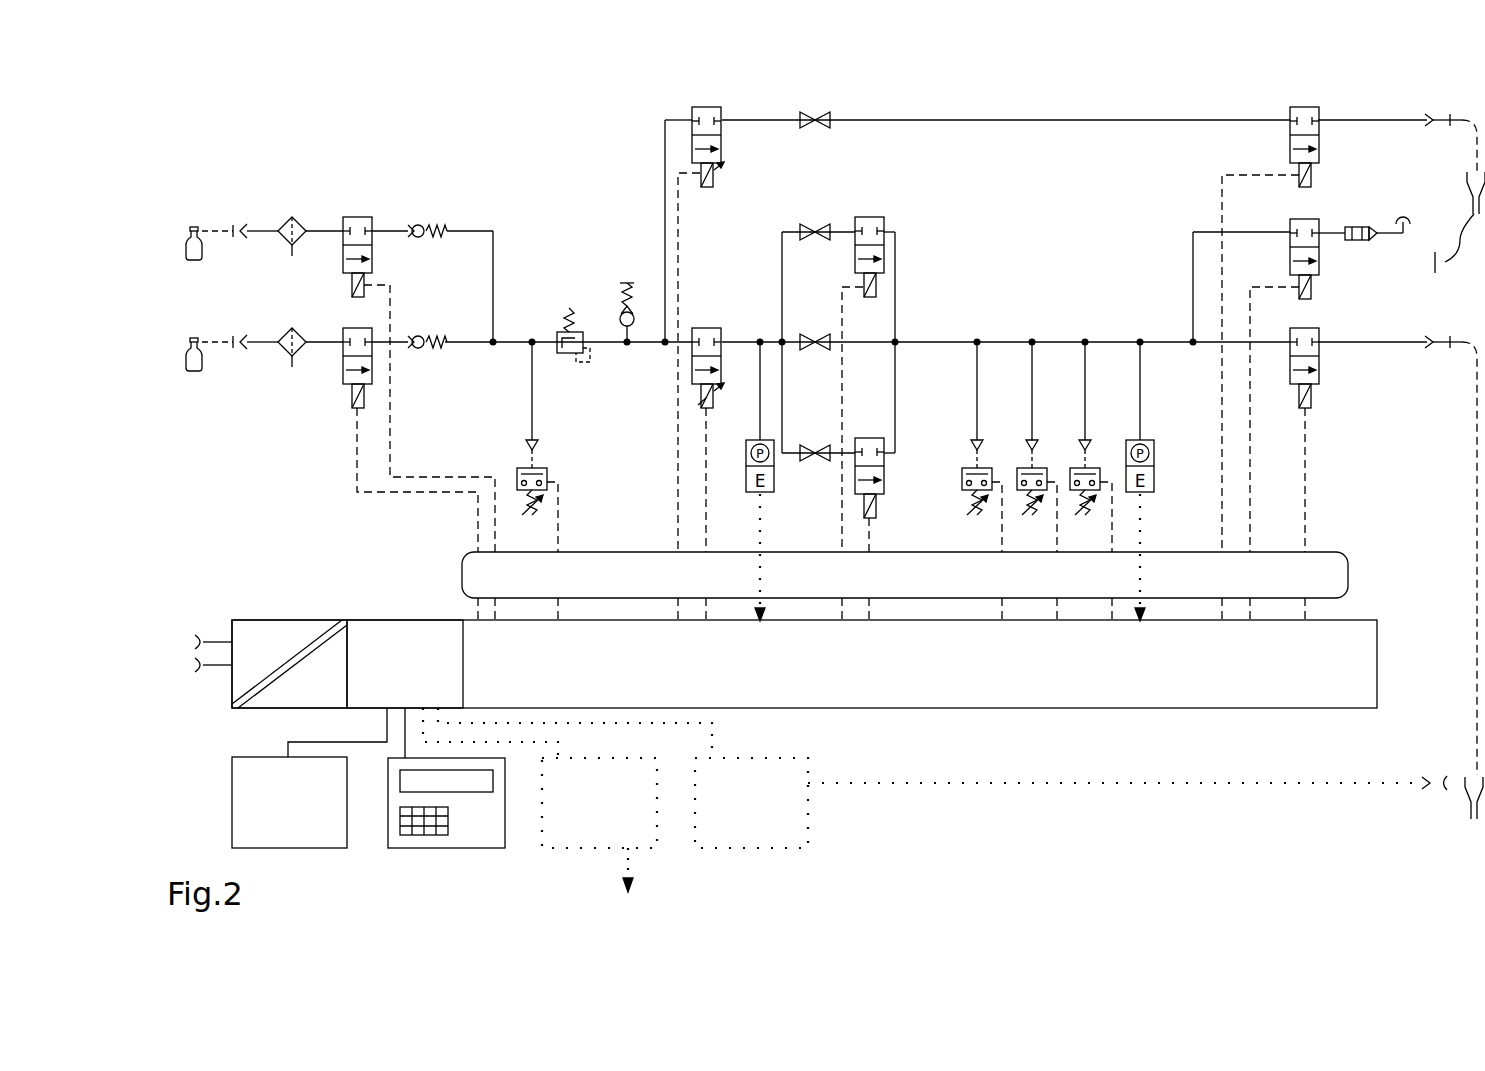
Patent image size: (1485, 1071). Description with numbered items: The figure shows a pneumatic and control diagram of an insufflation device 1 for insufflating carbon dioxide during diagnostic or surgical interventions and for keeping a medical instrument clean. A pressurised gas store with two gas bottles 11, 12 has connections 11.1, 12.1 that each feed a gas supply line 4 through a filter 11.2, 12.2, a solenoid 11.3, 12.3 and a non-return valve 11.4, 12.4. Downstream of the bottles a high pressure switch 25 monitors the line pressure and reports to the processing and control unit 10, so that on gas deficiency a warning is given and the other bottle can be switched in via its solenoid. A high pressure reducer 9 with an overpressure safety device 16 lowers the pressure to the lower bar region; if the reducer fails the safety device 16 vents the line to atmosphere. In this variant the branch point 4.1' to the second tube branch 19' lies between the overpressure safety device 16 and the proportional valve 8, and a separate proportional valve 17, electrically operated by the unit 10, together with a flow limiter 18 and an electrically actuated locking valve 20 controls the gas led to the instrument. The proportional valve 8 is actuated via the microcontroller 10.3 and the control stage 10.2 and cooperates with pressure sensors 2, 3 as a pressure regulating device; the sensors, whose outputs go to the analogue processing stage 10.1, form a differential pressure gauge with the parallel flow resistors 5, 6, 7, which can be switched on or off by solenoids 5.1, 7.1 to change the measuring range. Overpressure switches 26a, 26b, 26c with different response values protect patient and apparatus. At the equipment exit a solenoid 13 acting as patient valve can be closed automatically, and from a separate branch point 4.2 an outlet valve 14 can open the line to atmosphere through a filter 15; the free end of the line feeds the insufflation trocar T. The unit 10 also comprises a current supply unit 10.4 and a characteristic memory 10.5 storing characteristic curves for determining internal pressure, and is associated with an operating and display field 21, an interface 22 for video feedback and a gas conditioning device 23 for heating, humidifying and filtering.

The insufflation device 1 is at (556, 226).
The pressure sensor 2 is at (1155, 452).
The pressure sensor 3 is at (774, 482).
The gas supply line 4 is at (1060, 342).
The branch point 4.1' is at (977, 198).
The branch point 4.2 is at (1193, 342).
The flow resistor 5 is at (815, 225).
The solenoid 5.1 is at (870, 217).
The flow resistor 6 is at (812, 334).
The flow resistor 7 is at (812, 445).
The solenoid 7.1 is at (884, 488).
The proportional valve 8 is at (705, 330).
The high pressure reducer 9 is at (572, 305).
The processing and control unit 10 is at (829, 614).
The analogue processing stage 10.1 is at (1377, 665).
The control stage 10.2 is at (1350, 575).
The microcontroller 10.3 is at (405, 620).
The current supply unit 10.4 is at (310, 620).
The characteristic memory 10.5 is at (290, 848).
The gas bottle 11 is at (188, 250).
The connection 11.1 is at (240, 231).
The filter 11.2 is at (300, 224).
The solenoid 11.3 is at (360, 217).
The non-return valve 11.4 is at (438, 222).
The gas bottle 12 is at (188, 344).
The connection 12.1 is at (240, 340).
The filter 12.2 is at (283, 353).
The solenoid 12.3 is at (343, 375).
The non-return valve 12.4 is at (433, 352).
The solenoid (patient valve) 13 is at (1318, 378).
The solenoid (outlet valve) 14 is at (1303, 217).
The filter 15 is at (1367, 242).
The overpressure safety device 16 is at (623, 285).
The proportional valve 17 is at (705, 107).
The flow limiter 18 is at (818, 112).
The second tube branch 19' is at (1401, 165).
The locking valve 20 is at (1300, 107).
The operating and display field 21 is at (445, 848).
The interface 22 is at (558, 848).
The gas conditioning device 23 is at (712, 848).
The high pressure switch 25 is at (546, 470).
The overpressure switch 26a is at (965, 468).
The overpressure switch 26b is at (1020, 468).
The overpressure switch 26c is at (1075, 468).
The insufflation trocar T is at (1470, 800).